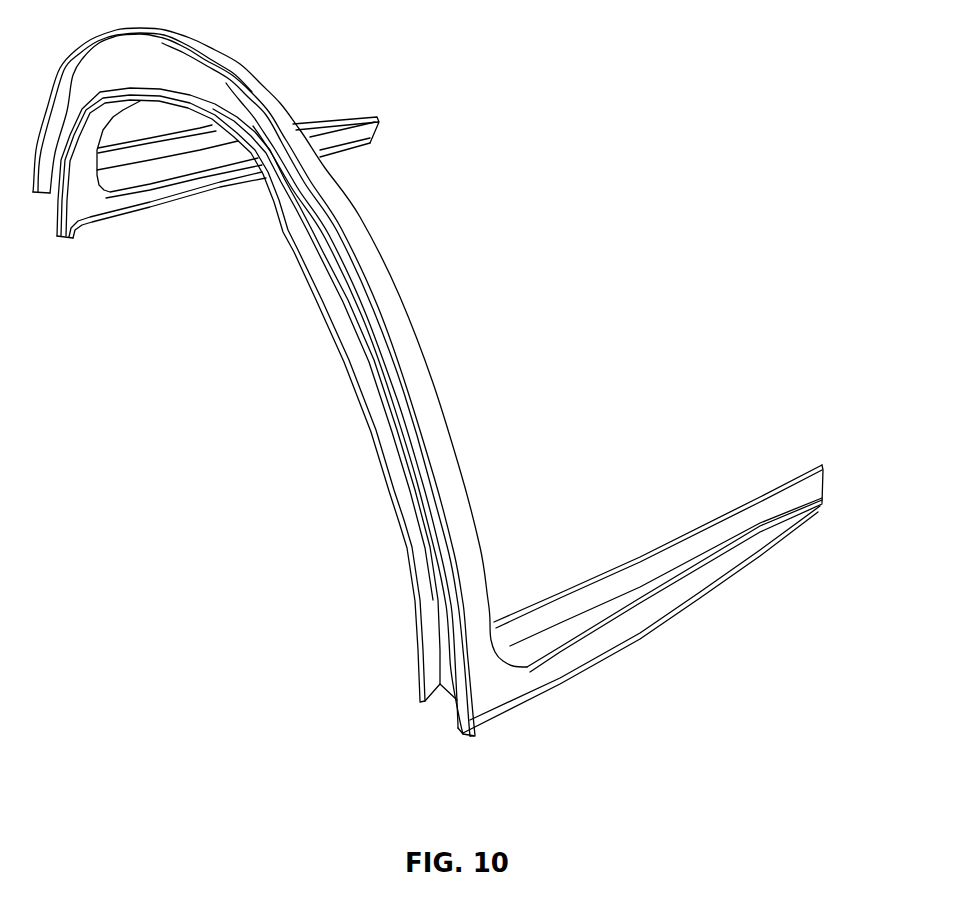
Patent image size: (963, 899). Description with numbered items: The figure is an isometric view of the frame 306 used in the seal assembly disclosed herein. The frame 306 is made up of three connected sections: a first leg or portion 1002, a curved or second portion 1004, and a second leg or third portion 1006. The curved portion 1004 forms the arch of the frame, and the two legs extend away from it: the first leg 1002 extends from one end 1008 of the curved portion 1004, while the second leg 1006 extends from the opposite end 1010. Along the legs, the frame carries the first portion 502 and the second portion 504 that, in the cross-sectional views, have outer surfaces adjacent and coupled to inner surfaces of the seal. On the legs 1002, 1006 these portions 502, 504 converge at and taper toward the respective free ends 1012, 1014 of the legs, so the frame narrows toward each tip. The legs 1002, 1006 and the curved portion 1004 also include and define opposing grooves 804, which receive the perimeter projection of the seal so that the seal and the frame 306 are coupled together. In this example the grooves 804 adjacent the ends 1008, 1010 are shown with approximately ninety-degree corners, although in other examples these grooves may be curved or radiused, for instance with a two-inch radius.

The frame 306 is at (566, 246).
The second leg or third portion 1006 is at (318, 120).
The end 1014 is at (370, 127).
The curved or second portion 1004 is at (330, 255).
The end 1010 is at (70, 238).
The groove 804 is at (167, 200).
The end 1008 is at (463, 735).
The first portion 502 is at (660, 557).
The end 1012 is at (821, 478).
The first leg or portion 1002 is at (595, 645).
The second portion 504 is at (690, 580).